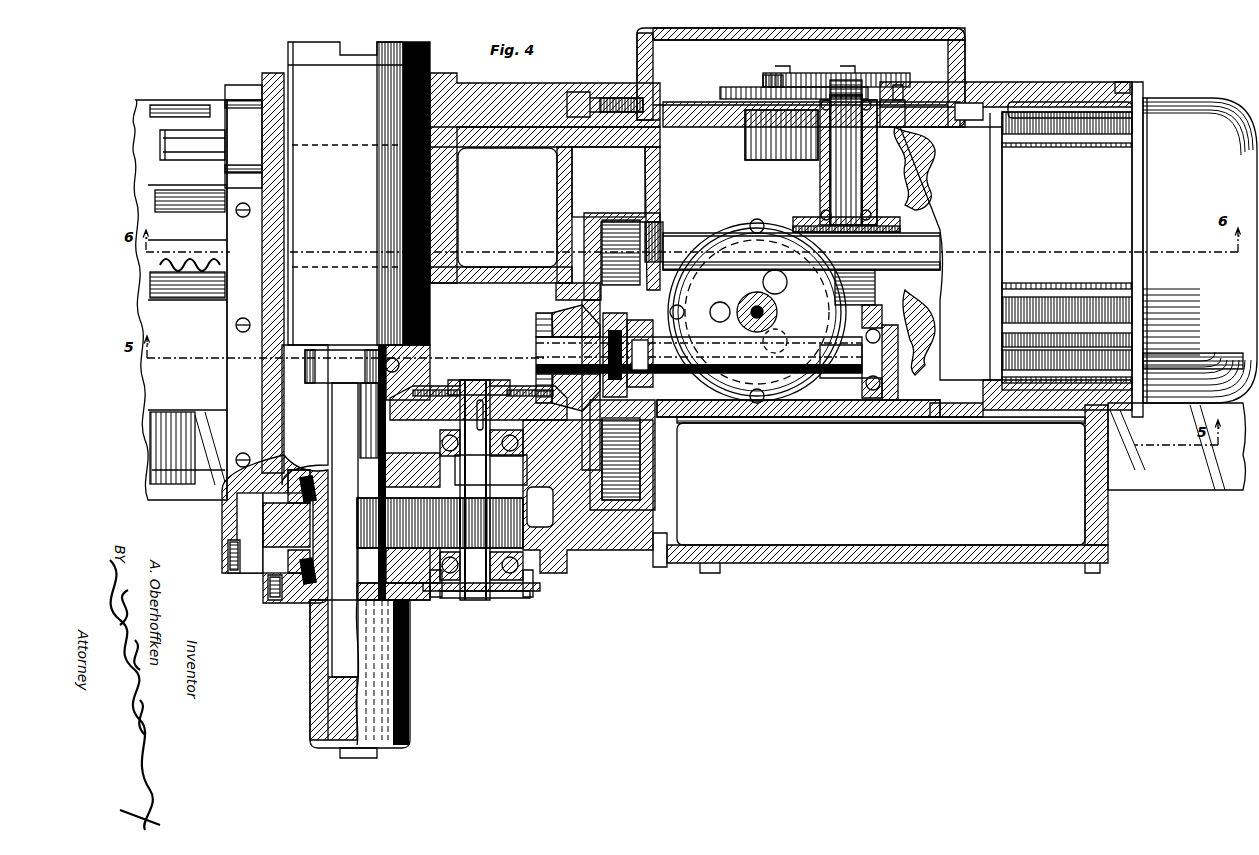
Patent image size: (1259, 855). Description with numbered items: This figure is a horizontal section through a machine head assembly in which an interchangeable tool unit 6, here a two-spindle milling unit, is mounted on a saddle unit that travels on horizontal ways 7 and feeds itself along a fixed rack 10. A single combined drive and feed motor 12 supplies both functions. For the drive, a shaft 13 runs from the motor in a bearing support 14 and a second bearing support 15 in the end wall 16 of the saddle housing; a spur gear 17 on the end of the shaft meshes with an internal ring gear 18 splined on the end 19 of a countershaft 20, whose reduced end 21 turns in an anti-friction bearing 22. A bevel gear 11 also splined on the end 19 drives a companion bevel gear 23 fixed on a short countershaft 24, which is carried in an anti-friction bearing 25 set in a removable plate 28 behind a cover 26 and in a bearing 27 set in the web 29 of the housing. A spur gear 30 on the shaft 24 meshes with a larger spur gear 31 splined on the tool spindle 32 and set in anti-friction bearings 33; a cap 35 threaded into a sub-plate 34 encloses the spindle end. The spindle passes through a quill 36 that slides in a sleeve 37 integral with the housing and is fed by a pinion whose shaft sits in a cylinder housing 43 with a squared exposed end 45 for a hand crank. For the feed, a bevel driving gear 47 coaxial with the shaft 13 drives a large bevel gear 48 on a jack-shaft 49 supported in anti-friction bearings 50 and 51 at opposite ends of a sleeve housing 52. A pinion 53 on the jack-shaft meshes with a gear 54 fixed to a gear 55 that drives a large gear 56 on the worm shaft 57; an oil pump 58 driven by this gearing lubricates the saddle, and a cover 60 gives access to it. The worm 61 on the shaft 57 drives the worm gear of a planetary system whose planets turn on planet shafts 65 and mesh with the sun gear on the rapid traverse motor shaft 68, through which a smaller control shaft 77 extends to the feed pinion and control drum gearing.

The tool unit 6 is at (590, 545).
The horizontal ways 7 is at (1180, 470).
The rack 10 is at (160, 262).
The bevel gear 11 is at (560, 315).
The combined drive and feed motor 12 is at (1129, 249).
The shaft 13 is at (683, 245).
The bearing support 14 is at (940, 232).
The second bearing support 15 is at (657, 233).
The end wall 16 is at (648, 170).
The spur gear 17 is at (628, 235).
The internal ring gear 18 is at (585, 237).
The end of countershaft 19 is at (560, 345).
The countershaft 20 is at (835, 375).
The reduced end of countershaft 21 is at (850, 345).
The anti-friction bearing 22 is at (862, 400).
The companion bevel gear 23 is at (528, 395).
The short countershaft 24 is at (470, 472).
The anti-friction bearing 25 is at (500, 591).
The cover 26 is at (480, 598).
The anti-friction bearing 27 is at (440, 440).
The removable plate 28 is at (568, 575).
The web 29 is at (441, 430).
The spur gear 30 is at (495, 515).
The spur gear 31 is at (372, 540).
The tool spindle 32 is at (345, 405).
The anti-friction bearings 33 is at (308, 470).
The sub-plate 34 is at (285, 603).
The cap 35 is at (312, 655).
The quill 36 is at (325, 120).
The sleeve 37 is at (450, 160).
The cylinder housing 43 is at (248, 125).
The exposed squared shaft end 45 is at (212, 136).
The bevel driving gear 47 is at (870, 312).
The large bevel gear 48 is at (800, 222).
The jack-shaft 49 is at (838, 170).
The anti-friction bearing 50 is at (822, 212).
The anti-friction bearing 51 is at (872, 96).
The sleeve housing 52 is at (905, 125).
The pinion 53 is at (850, 84).
The gear 54 is at (756, 88).
The gear 55 is at (772, 78).
The large gear 56 is at (812, 72).
The worm shaft 57 is at (858, 278).
The oil pump 58 is at (765, 160).
The cover 60 is at (965, 40).
The worm 61 is at (780, 300).
The planet shafts 65 is at (700, 300).
The rapid traverse motor shaft 68 is at (765, 284).
The control shaft 77 is at (745, 305).